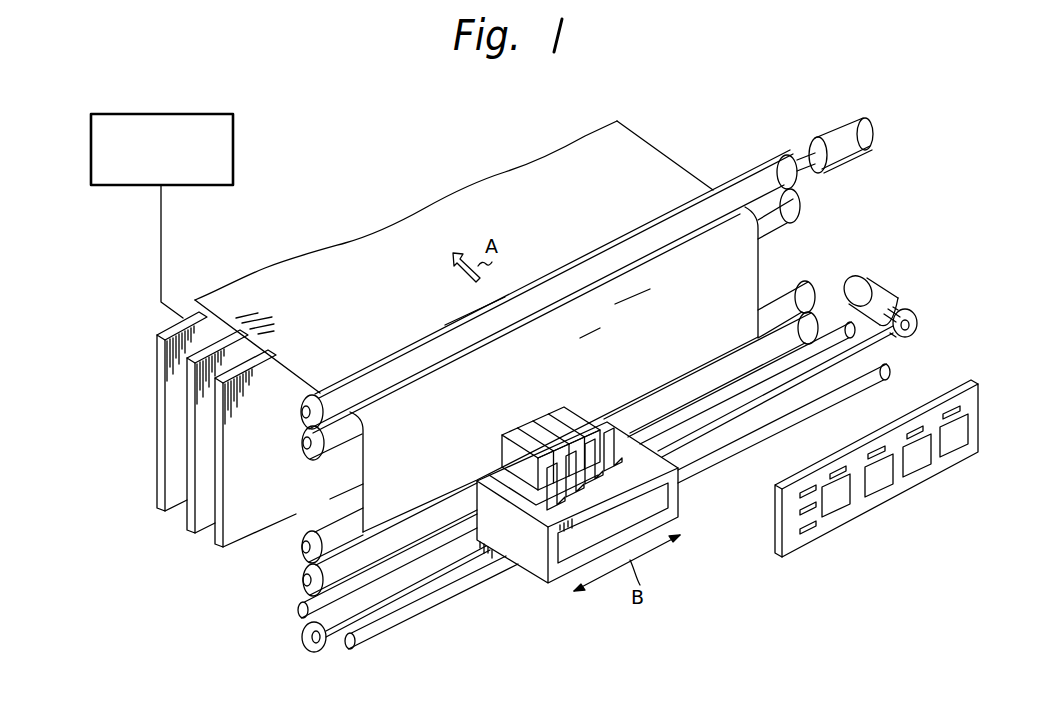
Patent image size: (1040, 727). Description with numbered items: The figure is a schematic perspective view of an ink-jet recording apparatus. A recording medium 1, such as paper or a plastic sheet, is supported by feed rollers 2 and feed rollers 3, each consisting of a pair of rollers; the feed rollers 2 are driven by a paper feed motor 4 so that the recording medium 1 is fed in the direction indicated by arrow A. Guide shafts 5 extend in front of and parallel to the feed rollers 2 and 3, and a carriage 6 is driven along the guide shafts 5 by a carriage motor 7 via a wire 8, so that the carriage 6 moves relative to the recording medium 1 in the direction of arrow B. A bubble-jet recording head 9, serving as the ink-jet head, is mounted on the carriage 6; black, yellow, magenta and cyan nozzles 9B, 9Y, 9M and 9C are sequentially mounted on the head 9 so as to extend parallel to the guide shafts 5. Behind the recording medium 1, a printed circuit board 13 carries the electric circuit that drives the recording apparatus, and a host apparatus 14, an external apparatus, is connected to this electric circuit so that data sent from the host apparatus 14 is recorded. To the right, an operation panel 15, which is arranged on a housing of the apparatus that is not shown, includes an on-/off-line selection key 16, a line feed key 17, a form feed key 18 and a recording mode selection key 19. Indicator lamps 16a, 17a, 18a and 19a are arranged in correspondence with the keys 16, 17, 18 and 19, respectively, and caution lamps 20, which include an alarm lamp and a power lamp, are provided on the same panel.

The recording medium 1 is at (655, 168).
The feed rollers 2 is at (287, 415).
The feed rollers 3 is at (287, 552).
The paper feed motor 4 is at (838, 131).
The guide shafts 5 is at (835, 333).
The carriage 6 is at (680, 494).
The carriage motor 7 is at (878, 294).
The wire 8 is at (896, 346).
The bubble-jet recording head 9 is at (546, 420).
The black nozzle 9B is at (512, 432).
The yellow nozzle 9Y is at (530, 427).
The magenta nozzle 9M is at (547, 411).
The cyan nozzle 9C is at (576, 407).
The printed circuit board 13 is at (216, 560).
The host apparatus 14 is at (236, 131).
The operation panel 15 is at (902, 474).
The on-/off-line selection key 16 is at (957, 445).
The indicator lamp 16a is at (962, 405).
The line feed key 17 is at (920, 463).
The indicator lamp 17a is at (924, 425).
The form feed key 18 is at (883, 482).
The indicator lamp 18a is at (880, 447).
The recording mode selection key 19 is at (842, 507).
The indicator lamp 19a is at (836, 467).
The caution lamps 20 is at (792, 492).